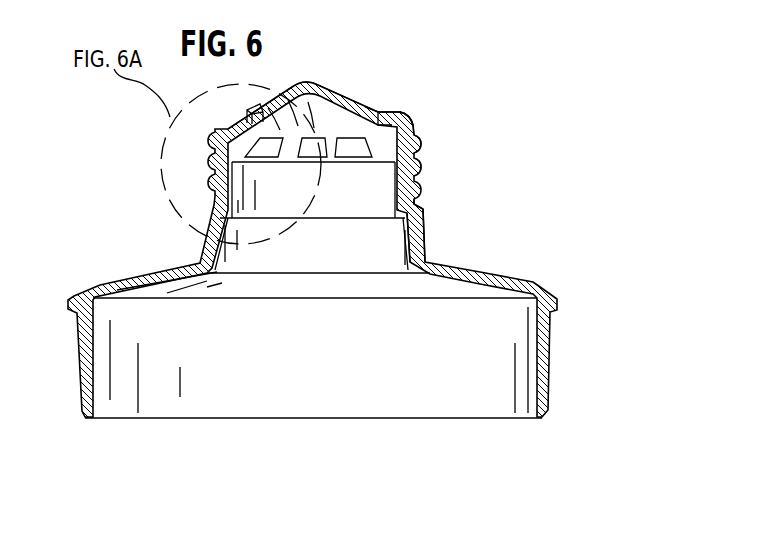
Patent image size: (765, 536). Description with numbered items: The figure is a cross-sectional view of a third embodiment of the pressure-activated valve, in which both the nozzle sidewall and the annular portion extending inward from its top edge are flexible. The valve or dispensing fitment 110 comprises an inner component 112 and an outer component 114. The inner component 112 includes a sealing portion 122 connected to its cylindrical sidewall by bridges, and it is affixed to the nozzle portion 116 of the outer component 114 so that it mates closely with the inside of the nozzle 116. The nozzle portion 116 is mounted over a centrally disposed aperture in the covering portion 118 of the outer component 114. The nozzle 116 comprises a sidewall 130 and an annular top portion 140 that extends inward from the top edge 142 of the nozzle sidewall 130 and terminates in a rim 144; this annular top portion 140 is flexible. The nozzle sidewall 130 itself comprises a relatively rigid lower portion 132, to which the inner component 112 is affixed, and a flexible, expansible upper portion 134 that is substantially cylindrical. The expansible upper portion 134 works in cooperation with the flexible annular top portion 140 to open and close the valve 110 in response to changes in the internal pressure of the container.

The valve 110 is at (515, 187).
The inner component 112 is at (395, 198).
The outer component 114 is at (500, 276).
The nozzle portion 116 is at (424, 207).
The covering portion 118 is at (133, 278).
The sealing portion 122 is at (337, 92).
The nozzle sidewall 130 is at (421, 168).
The lower portion 132 is at (425, 224).
The expansible upper portion 134 is at (421, 146).
The annular top portion 140 is at (398, 113).
The top edge 142 is at (413, 124).
The rim 144 is at (368, 107).